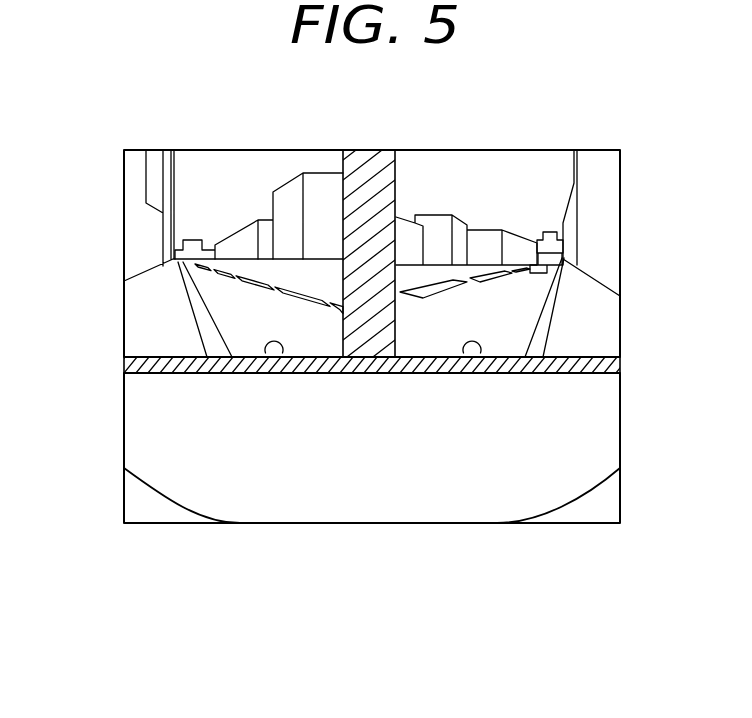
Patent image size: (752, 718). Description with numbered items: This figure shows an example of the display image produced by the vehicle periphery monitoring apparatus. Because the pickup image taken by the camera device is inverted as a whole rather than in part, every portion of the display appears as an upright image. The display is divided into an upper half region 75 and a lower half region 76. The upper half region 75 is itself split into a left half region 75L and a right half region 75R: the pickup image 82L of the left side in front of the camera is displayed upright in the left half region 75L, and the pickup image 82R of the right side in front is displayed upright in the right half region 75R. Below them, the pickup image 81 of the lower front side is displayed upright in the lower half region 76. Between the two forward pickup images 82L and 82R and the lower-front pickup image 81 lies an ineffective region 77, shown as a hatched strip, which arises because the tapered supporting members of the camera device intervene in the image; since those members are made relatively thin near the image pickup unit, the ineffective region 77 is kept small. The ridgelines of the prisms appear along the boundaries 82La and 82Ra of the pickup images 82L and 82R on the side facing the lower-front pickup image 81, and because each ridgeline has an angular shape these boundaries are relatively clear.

The upper half region 75 is at (638, 147).
The left half region 75L is at (345, 128).
The right half region 75R is at (620, 128).
The lower half region 76 is at (638, 372).
The ineffective region 77 is at (178, 368).
The pickup image on the lower front side 81 is at (405, 508).
The pickup image on the left side in front 82L is at (147, 310).
The pickup image on the right side in front 82R is at (588, 363).
The boundary of the left pickup image 82La is at (282, 353).
The boundary of the right pickup image 82Ra is at (480, 353).